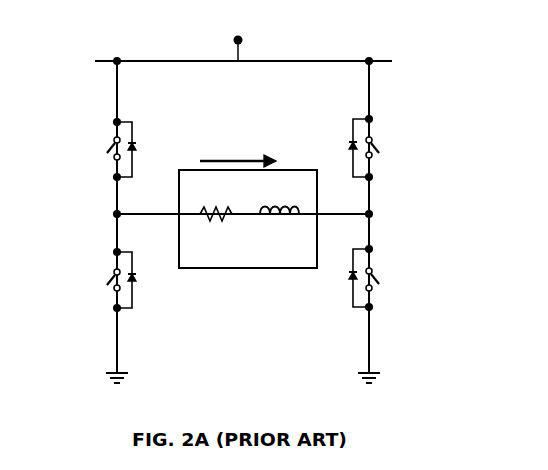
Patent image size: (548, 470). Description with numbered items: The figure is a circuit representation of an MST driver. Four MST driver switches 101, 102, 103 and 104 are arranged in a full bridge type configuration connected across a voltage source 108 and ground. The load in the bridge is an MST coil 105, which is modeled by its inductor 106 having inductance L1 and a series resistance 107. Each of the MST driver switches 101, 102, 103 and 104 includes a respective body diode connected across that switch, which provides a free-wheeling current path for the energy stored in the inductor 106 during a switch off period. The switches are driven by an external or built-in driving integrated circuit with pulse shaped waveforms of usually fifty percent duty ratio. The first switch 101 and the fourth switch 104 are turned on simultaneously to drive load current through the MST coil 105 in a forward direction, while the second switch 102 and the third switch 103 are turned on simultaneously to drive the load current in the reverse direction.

The first MST driver switch 101 is at (110, 149).
The second MST driver switch 102 is at (369, 148).
The third MST driver switch 103 is at (108, 280).
The fourth MST driver switch 104 is at (369, 278).
The MST coil 105 is at (248, 214).
The inductor 106 is at (279, 226).
The series resistance 107 is at (216, 226).
The voltage source 108 is at (250, 48).